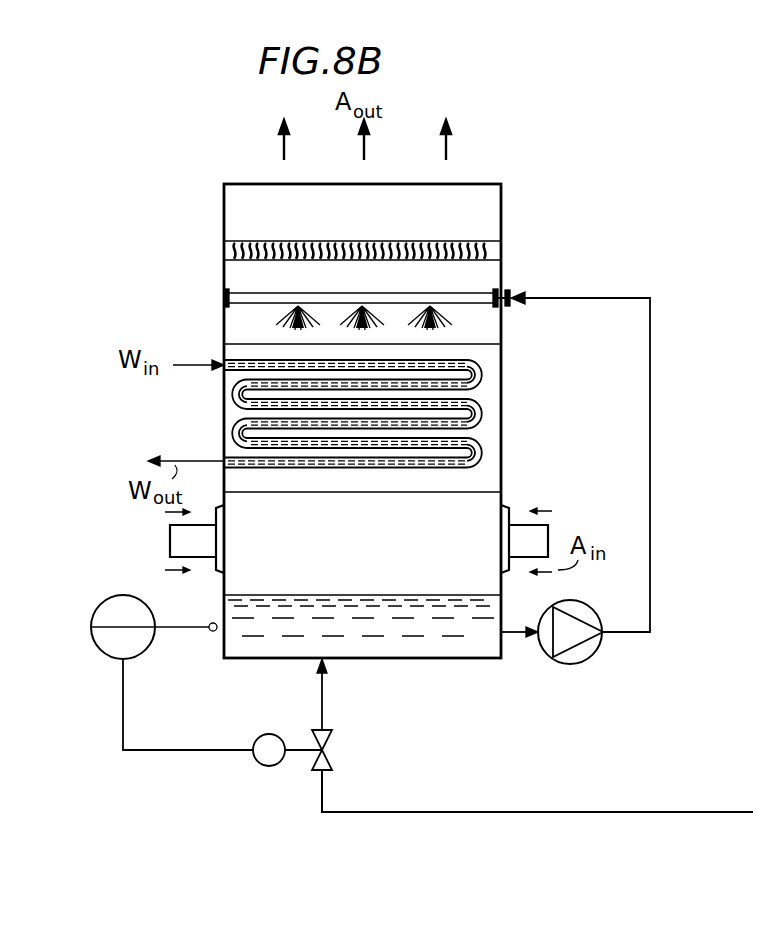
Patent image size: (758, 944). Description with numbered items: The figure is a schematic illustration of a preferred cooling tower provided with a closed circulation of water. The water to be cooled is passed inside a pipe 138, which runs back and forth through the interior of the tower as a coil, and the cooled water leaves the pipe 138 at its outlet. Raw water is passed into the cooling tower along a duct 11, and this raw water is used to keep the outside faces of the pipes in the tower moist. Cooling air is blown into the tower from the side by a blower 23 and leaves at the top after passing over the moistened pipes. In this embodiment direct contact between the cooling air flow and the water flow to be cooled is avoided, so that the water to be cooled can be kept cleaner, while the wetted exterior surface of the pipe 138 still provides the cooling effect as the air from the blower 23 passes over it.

The pipe 138 is at (480, 362).
The blower 23 is at (184, 541).
The duct 11 is at (585, 812).